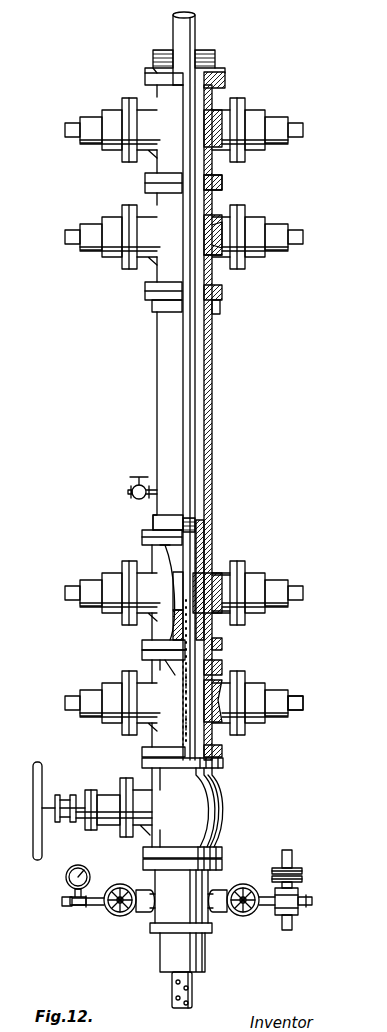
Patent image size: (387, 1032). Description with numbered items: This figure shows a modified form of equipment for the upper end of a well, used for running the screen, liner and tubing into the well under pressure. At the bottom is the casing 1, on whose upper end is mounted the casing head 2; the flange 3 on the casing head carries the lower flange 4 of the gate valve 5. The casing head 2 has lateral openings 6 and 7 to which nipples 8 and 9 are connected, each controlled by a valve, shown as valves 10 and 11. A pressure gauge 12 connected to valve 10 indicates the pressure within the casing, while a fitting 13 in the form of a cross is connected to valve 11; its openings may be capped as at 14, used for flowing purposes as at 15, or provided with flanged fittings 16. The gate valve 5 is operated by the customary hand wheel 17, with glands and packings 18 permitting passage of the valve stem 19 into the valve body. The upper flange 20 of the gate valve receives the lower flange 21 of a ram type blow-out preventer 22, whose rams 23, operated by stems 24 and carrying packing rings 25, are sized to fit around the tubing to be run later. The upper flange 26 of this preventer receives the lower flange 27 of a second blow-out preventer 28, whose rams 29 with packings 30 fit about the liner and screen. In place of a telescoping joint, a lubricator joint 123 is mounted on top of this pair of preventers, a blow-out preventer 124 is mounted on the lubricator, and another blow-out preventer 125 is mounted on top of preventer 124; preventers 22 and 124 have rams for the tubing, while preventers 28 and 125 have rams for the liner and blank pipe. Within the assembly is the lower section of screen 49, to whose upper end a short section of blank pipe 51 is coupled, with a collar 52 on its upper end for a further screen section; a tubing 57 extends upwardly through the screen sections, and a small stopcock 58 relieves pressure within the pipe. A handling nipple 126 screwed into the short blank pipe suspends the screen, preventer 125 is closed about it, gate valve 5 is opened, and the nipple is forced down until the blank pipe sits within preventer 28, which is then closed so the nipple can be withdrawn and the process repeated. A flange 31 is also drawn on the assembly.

The casing 1 is at (203, 952).
The casing head 2 is at (163, 922).
The flange 3 is at (222, 866).
The lower flange 4 is at (221, 850).
The gate valve 5 is at (222, 805).
The lateral opening 6 is at (152, 912).
The lateral opening 7 is at (210, 912).
The nipple 8 is at (144, 895).
The nipple 9 is at (222, 895).
The valve 10 is at (140, 907).
The valve 11 is at (250, 915).
The pressure gauge 12 is at (66, 880).
The fitting 13 is at (292, 894).
The capped opening 14 is at (292, 925).
The flowing opening 15 is at (310, 906).
The flanged fitting 16 is at (292, 863).
The hand wheel 17 is at (33, 793).
The glands and packings 18 is at (72, 798).
The valve stem 19 is at (52, 822).
The upper flange 20 is at (226, 763).
The lower flange 21 is at (215, 753).
The blow-out preventer 22 is at (213, 672).
The rams 23 is at (232, 708).
The stems 24 is at (302, 700).
The packing rings 25 is at (215, 705).
The upper flange 26 is at (145, 656).
The lower flange 27 is at (145, 646).
The blow-out preventer 28 is at (157, 558).
The rams 29 is at (218, 574).
The packings 30 is at (240, 585).
The flange 31 is at (142, 538).
The section of screen 49 is at (185, 730).
The section of blank pipe 51 is at (212, 562).
The collar 52 is at (212, 522).
The tubing 57 is at (178, 626).
The stopcock 58 is at (130, 488).
The lubricator joint 123 is at (210, 421).
The blow-out preventer 124 is at (222, 265).
The blow-out preventer 125 is at (222, 152).
The handling nipple 126 is at (187, 369).